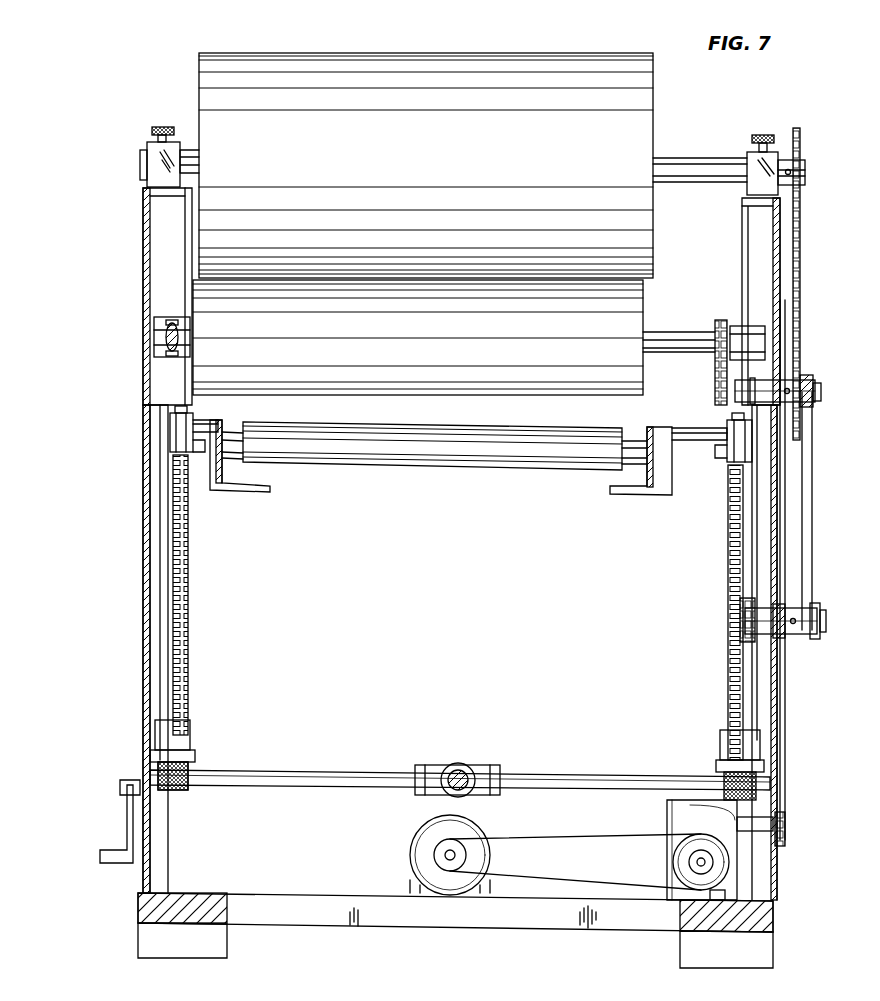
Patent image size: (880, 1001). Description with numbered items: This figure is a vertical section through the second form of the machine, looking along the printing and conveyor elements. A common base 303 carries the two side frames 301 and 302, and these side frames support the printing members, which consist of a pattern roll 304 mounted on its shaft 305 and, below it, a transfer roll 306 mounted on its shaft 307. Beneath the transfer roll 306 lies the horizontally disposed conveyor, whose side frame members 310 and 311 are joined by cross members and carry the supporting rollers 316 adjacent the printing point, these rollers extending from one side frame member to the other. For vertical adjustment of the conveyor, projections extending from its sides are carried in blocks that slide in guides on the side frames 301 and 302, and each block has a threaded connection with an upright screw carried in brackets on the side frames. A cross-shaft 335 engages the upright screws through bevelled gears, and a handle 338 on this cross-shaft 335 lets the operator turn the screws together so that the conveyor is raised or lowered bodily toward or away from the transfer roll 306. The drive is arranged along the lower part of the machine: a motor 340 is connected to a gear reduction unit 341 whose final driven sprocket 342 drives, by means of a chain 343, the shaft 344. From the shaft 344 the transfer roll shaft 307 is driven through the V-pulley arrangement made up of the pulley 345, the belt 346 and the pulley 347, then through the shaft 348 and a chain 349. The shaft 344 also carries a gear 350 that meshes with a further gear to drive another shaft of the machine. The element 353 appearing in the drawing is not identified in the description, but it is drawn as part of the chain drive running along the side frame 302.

The side frame 301 is at (145, 262).
The side frame 302 is at (775, 254).
The common base 303 is at (330, 914).
The pattern roll 304 is at (237, 90).
The shaft 305 is at (192, 148).
The transfer roll 306 is at (200, 310).
The shaft 307 is at (156, 337).
The side frame member 310 is at (265, 492).
The side frame member 311 is at (608, 492).
The supporting roller 316 is at (445, 465).
The cross-shaft 335 is at (292, 772).
The handle 338 is at (102, 862).
The motor 340 is at (432, 832).
The gear reduction unit 341 is at (668, 812).
The sprocket 342 is at (786, 830).
The chain 343 is at (787, 752).
The shaft 344 is at (832, 622).
The V-pulley 345 is at (812, 636).
The V-belt 346 is at (806, 502).
The V-pulley 347 is at (830, 378).
The shaft 348 is at (848, 416).
The chain 349 is at (718, 373).
The gear 350 is at (745, 600).
The upper chain 353 is at (800, 226).